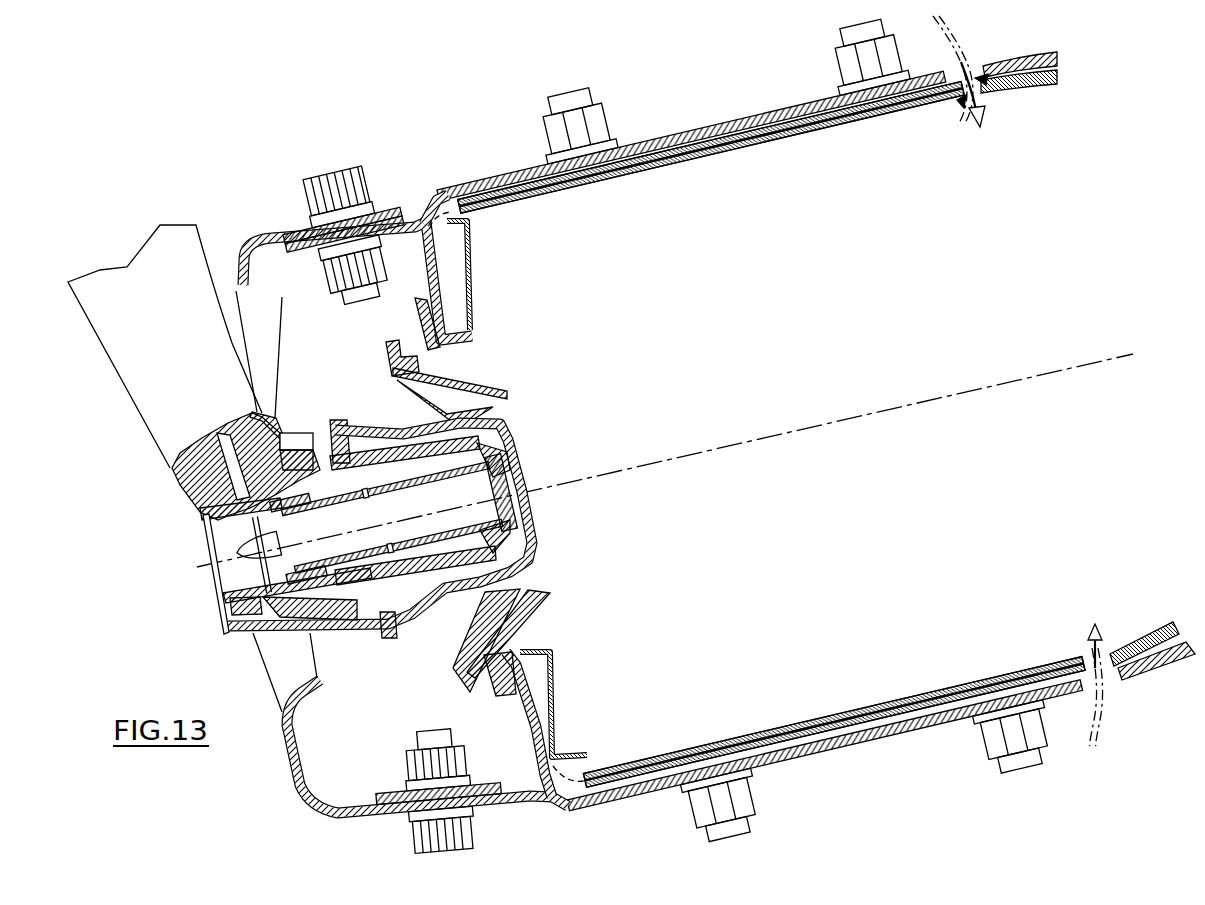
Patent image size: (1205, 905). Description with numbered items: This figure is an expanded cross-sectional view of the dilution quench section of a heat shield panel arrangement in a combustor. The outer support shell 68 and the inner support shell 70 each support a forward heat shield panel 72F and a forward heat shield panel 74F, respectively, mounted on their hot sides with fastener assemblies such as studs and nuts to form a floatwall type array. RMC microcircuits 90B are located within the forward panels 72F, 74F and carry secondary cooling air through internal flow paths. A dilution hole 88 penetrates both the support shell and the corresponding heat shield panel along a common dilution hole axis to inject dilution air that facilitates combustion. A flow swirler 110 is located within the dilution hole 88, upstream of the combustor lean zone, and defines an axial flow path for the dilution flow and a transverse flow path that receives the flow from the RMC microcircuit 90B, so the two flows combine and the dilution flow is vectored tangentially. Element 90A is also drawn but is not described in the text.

The outer support shell 68 is at (822, 100).
The inner support shell 70 is at (822, 762).
The forward heat shield panel 72F is at (923, 110).
The forward heat shield panel 74F is at (853, 710).
The dilution hole 88 is at (957, 82).
The first seal 90A is at (472, 288).
The RMC microcircuit 90B is at (831, 130).
The flow swirler 110 is at (978, 62).